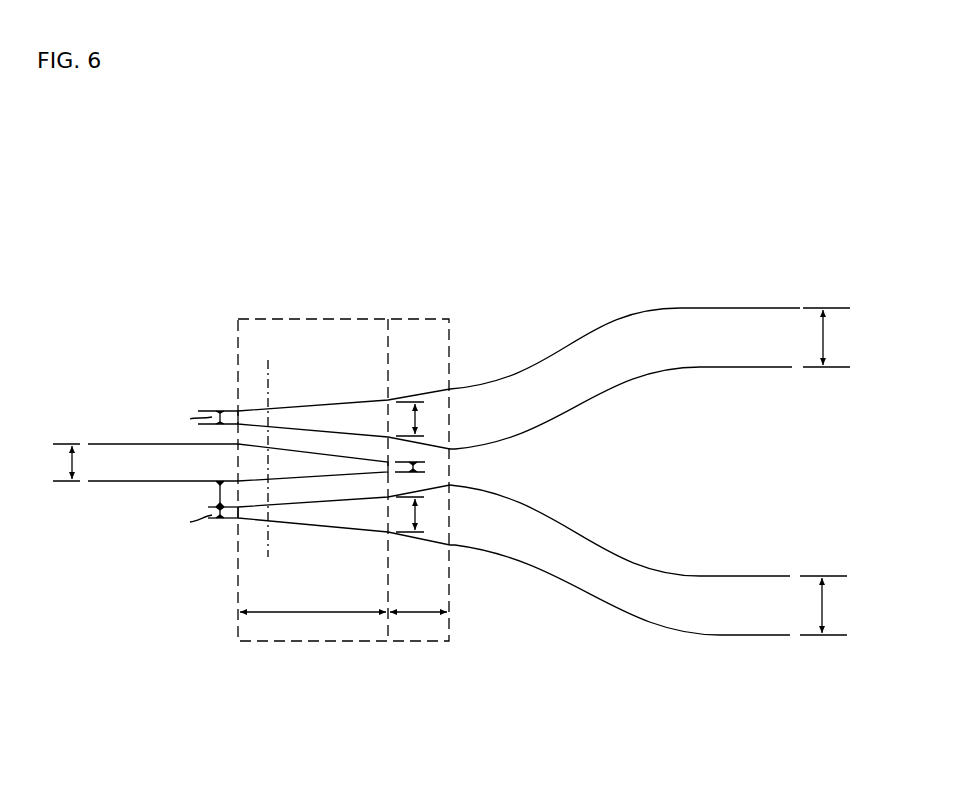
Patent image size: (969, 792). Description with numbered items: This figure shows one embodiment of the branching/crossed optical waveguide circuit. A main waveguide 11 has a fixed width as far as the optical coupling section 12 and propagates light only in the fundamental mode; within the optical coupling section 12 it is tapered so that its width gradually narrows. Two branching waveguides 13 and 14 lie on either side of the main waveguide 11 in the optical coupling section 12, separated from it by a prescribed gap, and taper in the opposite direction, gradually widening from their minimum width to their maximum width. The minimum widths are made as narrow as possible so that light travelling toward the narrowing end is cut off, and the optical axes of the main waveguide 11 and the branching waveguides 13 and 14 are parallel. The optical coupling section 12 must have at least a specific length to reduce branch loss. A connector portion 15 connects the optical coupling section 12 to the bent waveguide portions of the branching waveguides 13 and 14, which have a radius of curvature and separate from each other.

The main waveguide 11 is at (105, 477).
The optical coupling section 12 is at (285, 628).
The branching waveguide 13 is at (677, 312).
The branching waveguide 14 is at (685, 618).
The connector portion 15 is at (425, 640).